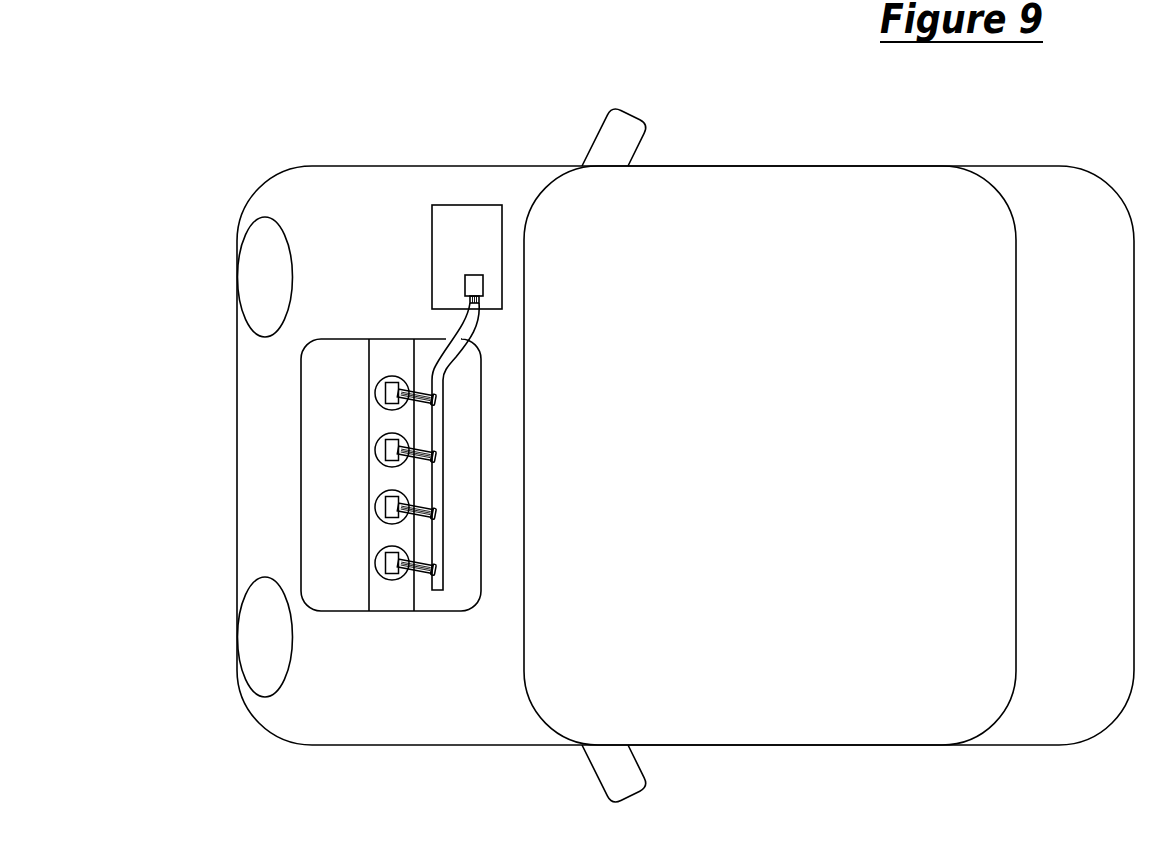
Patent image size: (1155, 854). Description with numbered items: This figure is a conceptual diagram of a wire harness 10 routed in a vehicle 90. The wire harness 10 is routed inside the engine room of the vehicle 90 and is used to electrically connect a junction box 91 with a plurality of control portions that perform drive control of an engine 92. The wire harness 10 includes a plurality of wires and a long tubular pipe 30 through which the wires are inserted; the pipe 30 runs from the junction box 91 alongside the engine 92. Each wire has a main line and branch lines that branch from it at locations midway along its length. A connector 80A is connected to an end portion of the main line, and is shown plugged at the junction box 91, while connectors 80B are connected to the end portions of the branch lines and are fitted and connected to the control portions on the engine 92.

The wire harness 10 is at (428, 333).
The pipe 30 is at (440, 546).
The connector 80A is at (474, 276).
The connector 80B is at (392, 572).
The vehicle 90 is at (780, 180).
The junction box 91 is at (488, 215).
The engine 92 is at (313, 436).